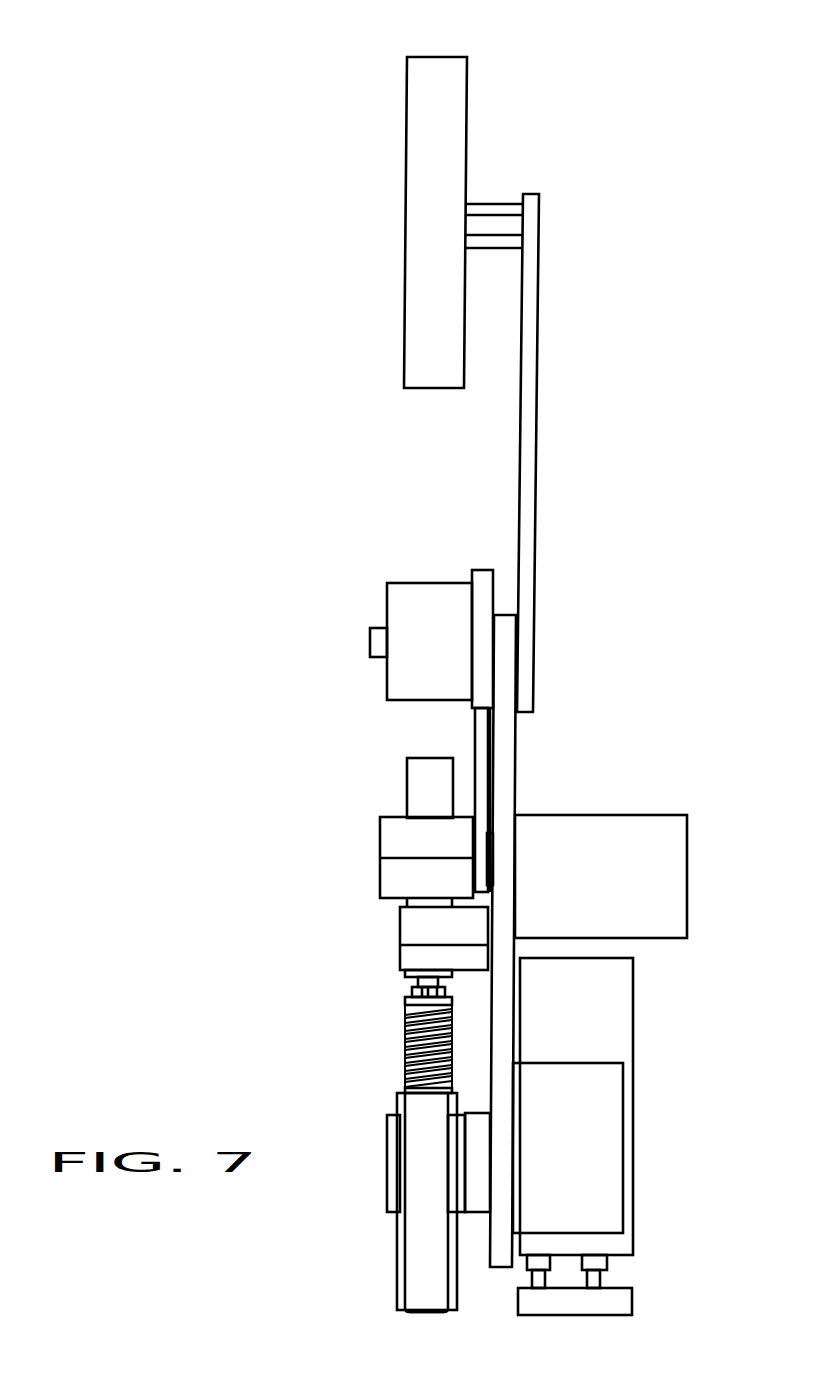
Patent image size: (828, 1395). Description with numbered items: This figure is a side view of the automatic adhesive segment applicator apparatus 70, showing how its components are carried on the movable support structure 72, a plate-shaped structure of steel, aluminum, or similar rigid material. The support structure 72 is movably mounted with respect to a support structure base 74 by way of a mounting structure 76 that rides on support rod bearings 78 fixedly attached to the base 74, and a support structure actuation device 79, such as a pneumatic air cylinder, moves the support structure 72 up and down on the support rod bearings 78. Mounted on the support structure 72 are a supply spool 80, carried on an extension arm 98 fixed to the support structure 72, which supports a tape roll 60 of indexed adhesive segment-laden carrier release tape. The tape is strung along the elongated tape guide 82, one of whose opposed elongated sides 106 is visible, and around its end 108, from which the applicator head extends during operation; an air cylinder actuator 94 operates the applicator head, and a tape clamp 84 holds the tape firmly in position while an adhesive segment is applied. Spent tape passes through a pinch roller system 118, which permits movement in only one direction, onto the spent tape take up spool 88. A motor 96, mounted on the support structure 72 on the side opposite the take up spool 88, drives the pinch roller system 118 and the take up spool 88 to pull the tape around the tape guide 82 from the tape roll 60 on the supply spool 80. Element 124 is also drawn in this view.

The tape roll 60 is at (438, 55).
The automatic adhesive segment applicator apparatus 70 is at (580, 186).
The movable support structure 72 is at (516, 785).
The support structure base 74 is at (628, 1300).
The mounting structure 76 is at (612, 1147).
The support rod bearings 78 is at (605, 1278).
The support structure actuation device 79 is at (622, 1022).
The supply spool 80 is at (468, 202).
The tape guide 82 is at (398, 1225).
The tape clamp 84 is at (388, 1157).
The spent tape take up spool 88 is at (423, 581).
The air cylinder actuator 94 is at (407, 782).
The motor 96 is at (640, 825).
The extension arm 98 is at (537, 402).
The elongated side 106 is at (418, 1272).
The end of the tape guide 108 is at (427, 1317).
The pinch roller system 118 is at (380, 862).
The nut 124 is at (492, 873).